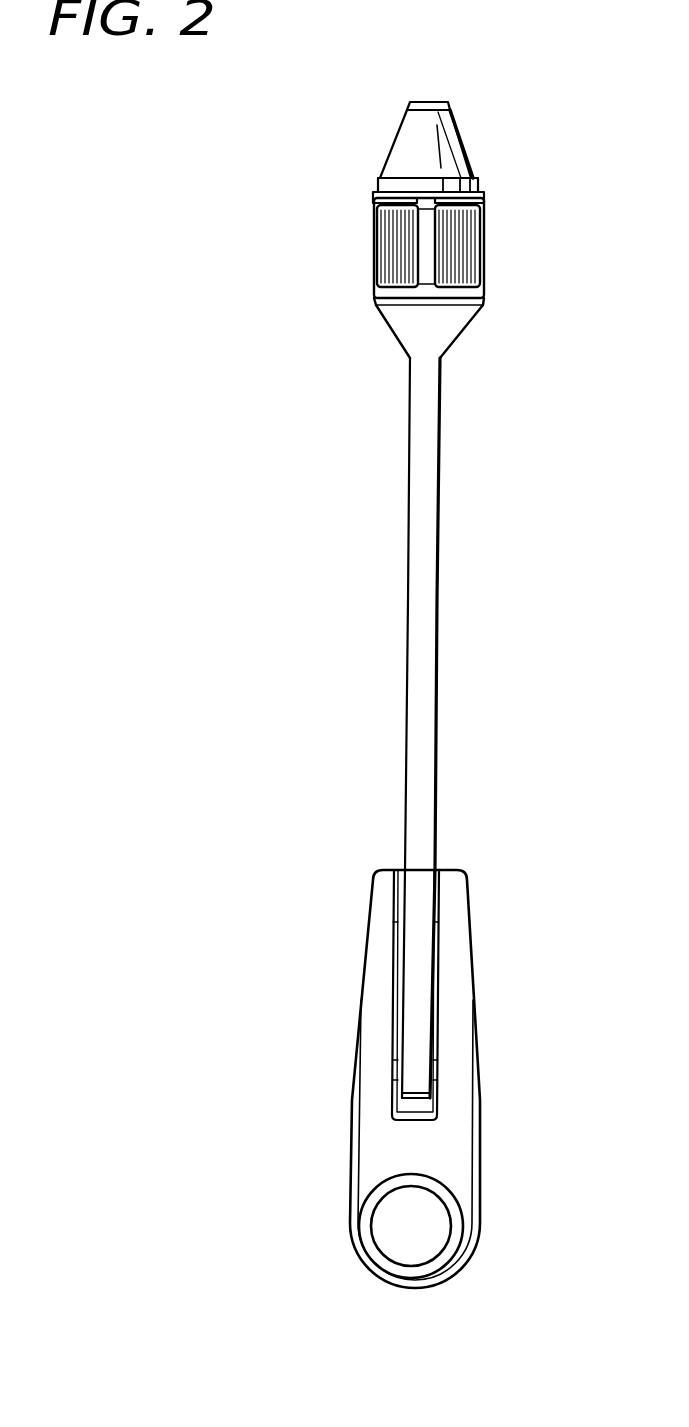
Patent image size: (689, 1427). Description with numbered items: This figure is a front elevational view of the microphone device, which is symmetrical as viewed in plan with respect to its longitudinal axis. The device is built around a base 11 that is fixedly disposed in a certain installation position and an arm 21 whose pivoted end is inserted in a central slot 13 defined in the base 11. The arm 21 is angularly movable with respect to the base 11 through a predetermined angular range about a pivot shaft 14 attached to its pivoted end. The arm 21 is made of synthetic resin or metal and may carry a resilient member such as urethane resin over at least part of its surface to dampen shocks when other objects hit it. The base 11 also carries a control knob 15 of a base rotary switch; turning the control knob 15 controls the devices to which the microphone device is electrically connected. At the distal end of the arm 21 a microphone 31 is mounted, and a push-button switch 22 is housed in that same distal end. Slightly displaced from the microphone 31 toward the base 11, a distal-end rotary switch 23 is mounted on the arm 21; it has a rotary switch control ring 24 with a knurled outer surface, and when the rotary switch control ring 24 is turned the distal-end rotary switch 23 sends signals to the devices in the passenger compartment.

The base 11 is at (473, 931).
The central slot 13 is at (391, 980).
The pivot shaft 14 is at (440, 1068).
The control knob 15 is at (452, 1223).
The arm 21 is at (440, 590).
The push-button switch 22 is at (435, 101).
The distal-end rotary switch 23 is at (483, 287).
The rotary switch control ring 24 is at (373, 238).
The microphone 31 is at (470, 136).